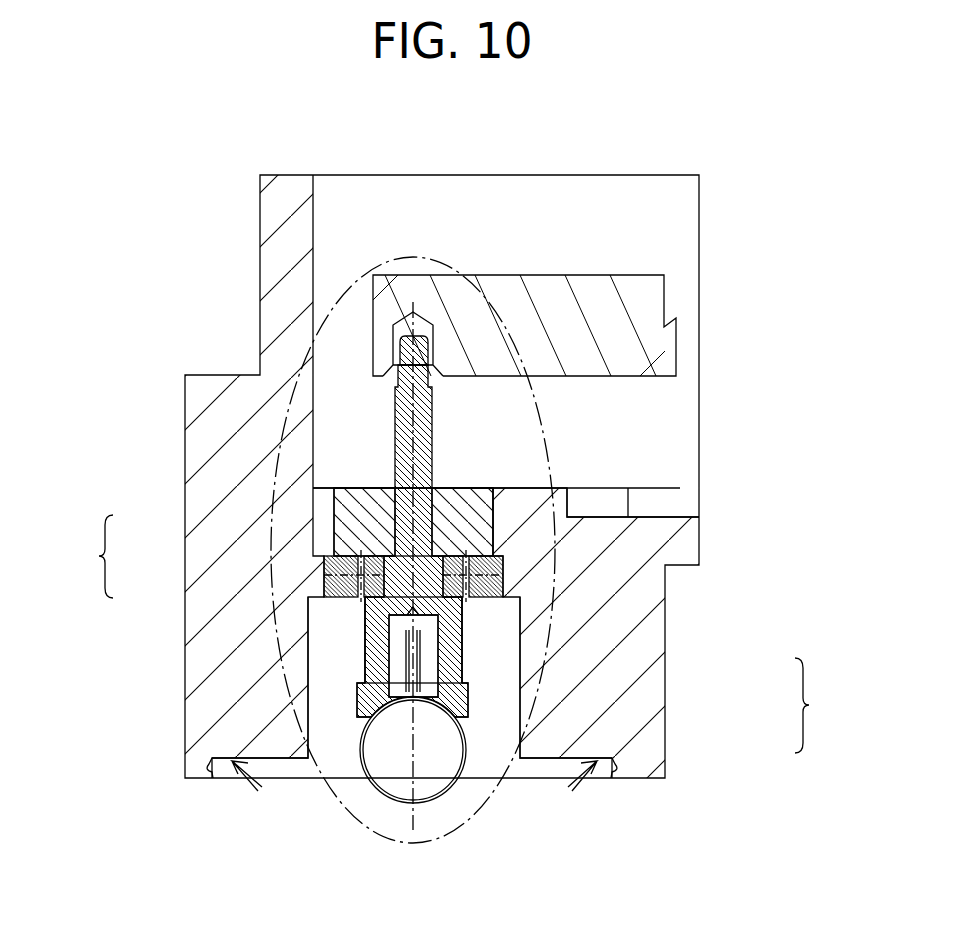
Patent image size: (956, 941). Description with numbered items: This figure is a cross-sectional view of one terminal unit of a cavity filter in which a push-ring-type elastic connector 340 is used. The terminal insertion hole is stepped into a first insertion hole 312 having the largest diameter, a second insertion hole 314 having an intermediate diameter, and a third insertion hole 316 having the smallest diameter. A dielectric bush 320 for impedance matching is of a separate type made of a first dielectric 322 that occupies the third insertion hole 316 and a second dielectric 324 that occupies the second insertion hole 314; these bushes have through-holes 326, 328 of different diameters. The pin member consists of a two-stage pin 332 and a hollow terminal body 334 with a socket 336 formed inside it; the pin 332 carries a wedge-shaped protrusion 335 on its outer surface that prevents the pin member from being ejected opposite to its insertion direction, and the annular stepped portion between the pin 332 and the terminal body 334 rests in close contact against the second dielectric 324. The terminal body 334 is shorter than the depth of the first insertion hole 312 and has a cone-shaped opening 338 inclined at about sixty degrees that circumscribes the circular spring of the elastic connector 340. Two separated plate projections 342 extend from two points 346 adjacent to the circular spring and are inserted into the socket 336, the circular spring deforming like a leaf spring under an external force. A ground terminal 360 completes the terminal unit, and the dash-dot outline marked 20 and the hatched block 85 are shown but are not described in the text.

The valve assembly 20 is at (302, 358).
The cover block 85 is at (602, 307).
The first insertion hole 312 is at (332, 716).
The second insertion hole 314 is at (310, 600).
The third insertion hole 316 is at (335, 505).
The dielectric bush 320 is at (217, 546).
The first dielectric 322 is at (365, 522).
The second dielectric 324 is at (324, 578).
The through-hole 326 is at (450, 514).
The through-hole 328 is at (503, 580).
The pin 332 is at (400, 432).
The terminal body 334 is at (365, 665).
The wedge-shaped protrusion 335 is at (490, 490).
The socket 336 is at (436, 621).
The cone-shaped opening 338 is at (462, 693).
The push-ring-type elastic connector 340 is at (482, 680).
The plate projections 342 is at (462, 642).
The points 346 is at (425, 705).
The ground terminal 360 is at (235, 787).